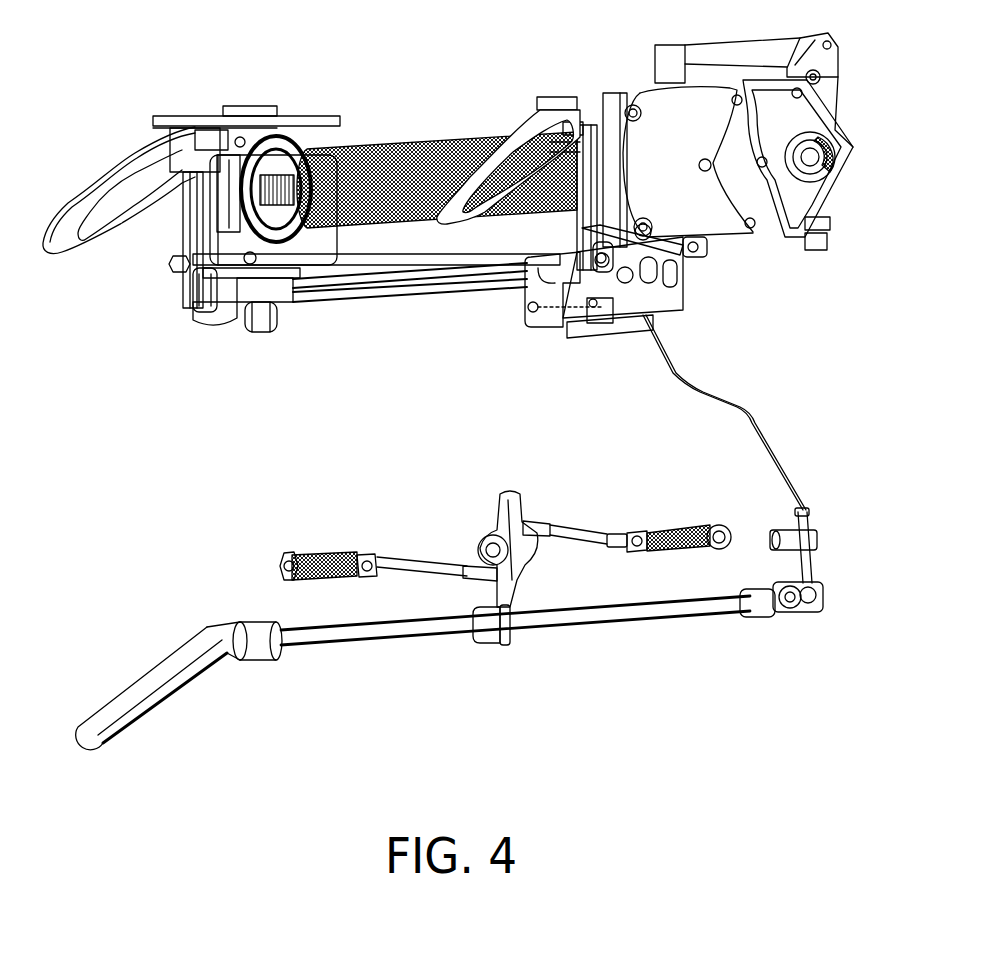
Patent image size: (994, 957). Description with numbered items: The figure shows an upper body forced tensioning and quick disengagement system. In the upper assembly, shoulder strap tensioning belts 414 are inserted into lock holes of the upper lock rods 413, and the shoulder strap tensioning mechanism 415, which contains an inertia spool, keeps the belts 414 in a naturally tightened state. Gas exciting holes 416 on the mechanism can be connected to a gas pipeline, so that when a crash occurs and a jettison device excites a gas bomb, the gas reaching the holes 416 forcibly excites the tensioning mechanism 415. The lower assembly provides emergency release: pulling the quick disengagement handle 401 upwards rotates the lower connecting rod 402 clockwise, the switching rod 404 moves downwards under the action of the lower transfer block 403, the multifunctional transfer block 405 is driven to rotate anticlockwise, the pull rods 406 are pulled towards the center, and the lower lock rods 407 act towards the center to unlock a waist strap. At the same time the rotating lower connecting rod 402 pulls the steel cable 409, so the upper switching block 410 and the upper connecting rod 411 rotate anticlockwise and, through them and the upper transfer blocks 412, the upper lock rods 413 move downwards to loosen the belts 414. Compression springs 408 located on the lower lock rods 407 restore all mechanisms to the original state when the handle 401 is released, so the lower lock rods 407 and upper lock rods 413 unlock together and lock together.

The quick disengagement handle 401 is at (197, 663).
The lower connecting rod 402 is at (543, 627).
The lower transfer block 403 is at (487, 625).
The switching rod 404 is at (530, 545).
The multifunctional transfer block 405 is at (500, 493).
The pull rods 406 is at (388, 552).
The lower lock rods 407 is at (728, 524).
The compression springs 408 is at (283, 557).
The steel cable 409 is at (750, 420).
The upper switching block 410 is at (530, 330).
The upper connecting rod 411 is at (370, 300).
The upper transfer blocks 412 is at (220, 327).
The upper lock rods 413 is at (192, 297).
The shoulder strap tensioning belts 414 is at (137, 157).
The shoulder strap tensioning mechanism 415 is at (373, 143).
The gas exciting holes 416 is at (905, 297).